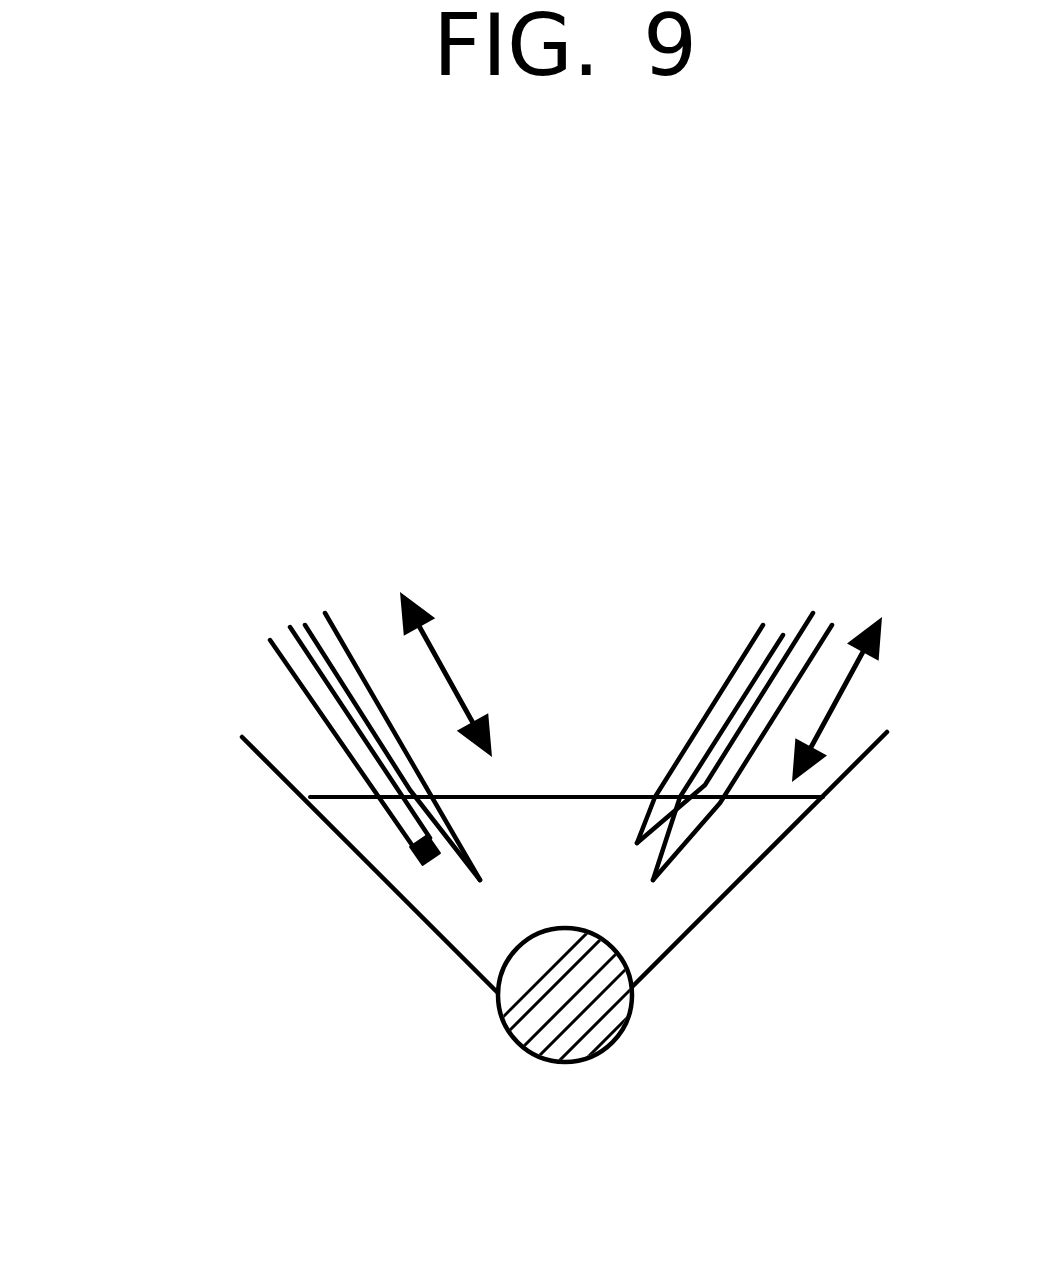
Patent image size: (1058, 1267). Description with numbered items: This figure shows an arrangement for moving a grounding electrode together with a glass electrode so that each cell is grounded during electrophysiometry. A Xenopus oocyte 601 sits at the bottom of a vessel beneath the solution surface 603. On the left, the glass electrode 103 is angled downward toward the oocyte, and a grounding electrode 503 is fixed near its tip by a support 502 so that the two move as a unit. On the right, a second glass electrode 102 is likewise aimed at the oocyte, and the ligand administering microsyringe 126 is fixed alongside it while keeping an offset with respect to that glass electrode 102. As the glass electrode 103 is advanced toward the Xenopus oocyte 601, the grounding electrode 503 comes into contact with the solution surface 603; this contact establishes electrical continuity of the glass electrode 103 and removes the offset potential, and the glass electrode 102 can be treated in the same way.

The glass electrode 102 is at (795, 657).
The glass electrode 103 is at (320, 627).
The ligand administering microsyringe 126 is at (723, 680).
The support 502 is at (332, 705).
The grounding electrode 503 is at (417, 860).
The Xenopus Oocytes 601 is at (600, 1047).
The solution surface 603 is at (542, 795).